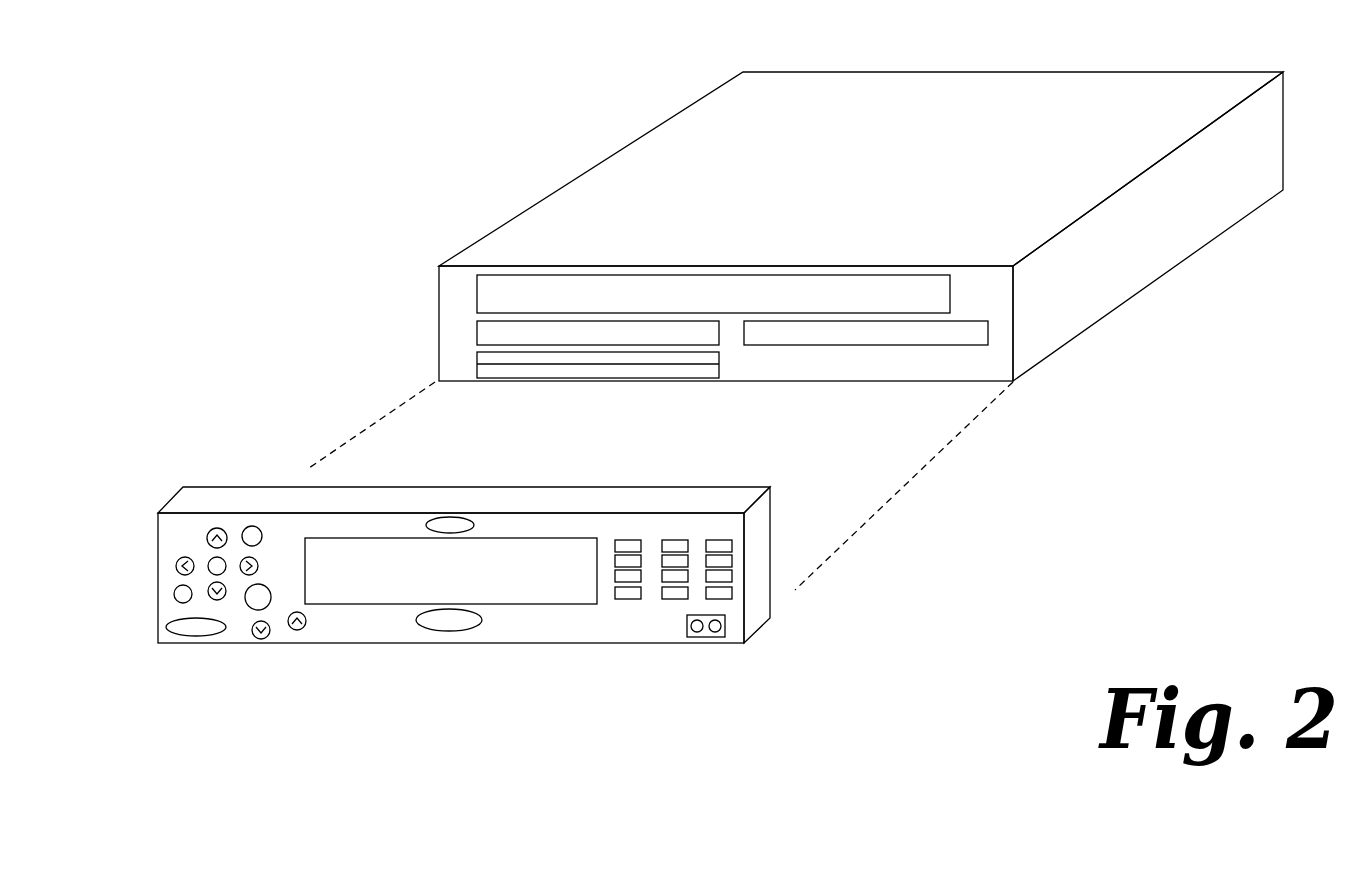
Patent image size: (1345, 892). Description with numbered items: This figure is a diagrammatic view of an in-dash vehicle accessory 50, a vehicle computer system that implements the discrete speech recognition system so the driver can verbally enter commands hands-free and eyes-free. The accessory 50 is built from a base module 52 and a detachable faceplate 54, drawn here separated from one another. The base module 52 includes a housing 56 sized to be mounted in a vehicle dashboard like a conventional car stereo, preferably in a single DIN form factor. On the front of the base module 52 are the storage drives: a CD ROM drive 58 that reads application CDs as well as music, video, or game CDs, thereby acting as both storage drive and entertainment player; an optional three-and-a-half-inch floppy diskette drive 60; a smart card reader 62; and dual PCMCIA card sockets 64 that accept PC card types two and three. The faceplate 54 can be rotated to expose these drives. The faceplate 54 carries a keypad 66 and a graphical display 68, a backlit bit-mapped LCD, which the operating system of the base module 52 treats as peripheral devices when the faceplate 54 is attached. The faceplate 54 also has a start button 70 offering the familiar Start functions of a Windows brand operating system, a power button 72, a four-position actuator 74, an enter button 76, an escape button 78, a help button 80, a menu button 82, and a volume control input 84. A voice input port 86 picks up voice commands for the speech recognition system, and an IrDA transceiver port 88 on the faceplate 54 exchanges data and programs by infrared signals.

The vehicle accessory 50 is at (326, 117).
The base module 52 is at (1119, 391).
The detachable faceplate 54 is at (772, 683).
The housing 56 is at (1170, 289).
The CD ROM drive 58 is at (643, 293).
The floppy diskette drive 60 is at (542, 333).
The smart card reader 62 is at (898, 333).
The dual PCMCIA card sockets 64 is at (610, 378).
The keypad 66 is at (675, 600).
The graphical display 68 is at (558, 540).
The start button 70 is at (448, 631).
The power button 72 is at (196, 637).
The four-position actuator 74 is at (208, 538).
The enter button 76 is at (208, 572).
The escape button 78 is at (252, 527).
The help button 80 is at (175, 597).
The menu button 82 is at (252, 607).
The volume control input 84 is at (270, 638).
The voice input port 86 is at (452, 520).
The IrDA transceiver port 88 is at (710, 637).